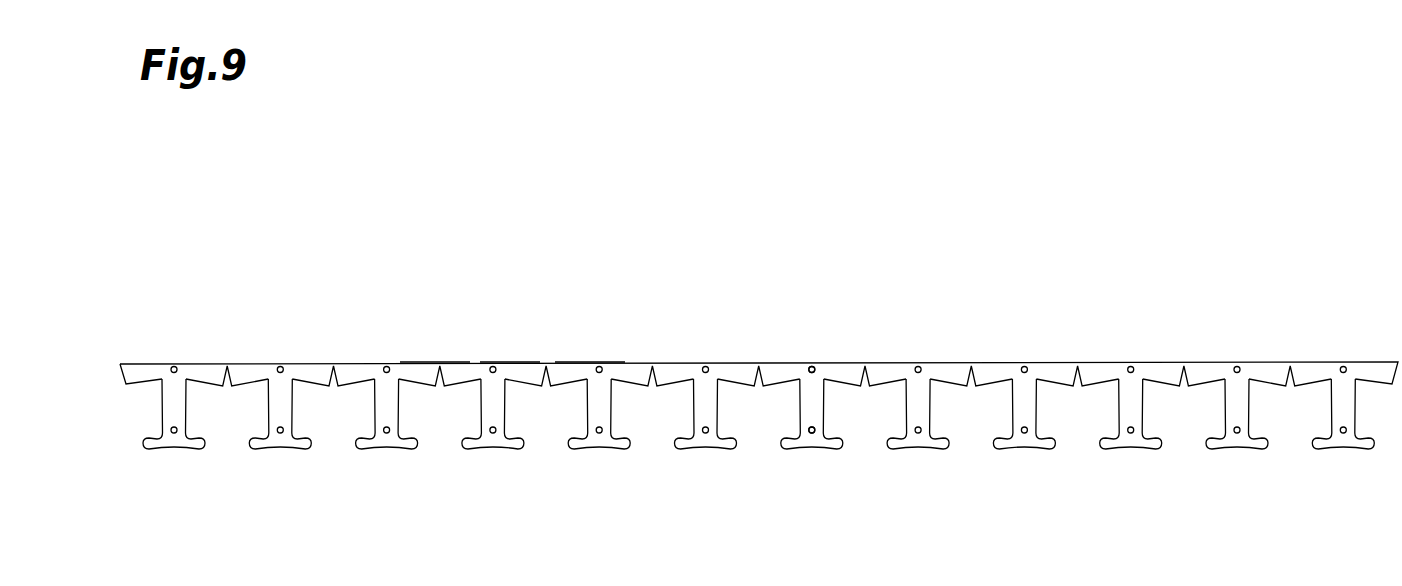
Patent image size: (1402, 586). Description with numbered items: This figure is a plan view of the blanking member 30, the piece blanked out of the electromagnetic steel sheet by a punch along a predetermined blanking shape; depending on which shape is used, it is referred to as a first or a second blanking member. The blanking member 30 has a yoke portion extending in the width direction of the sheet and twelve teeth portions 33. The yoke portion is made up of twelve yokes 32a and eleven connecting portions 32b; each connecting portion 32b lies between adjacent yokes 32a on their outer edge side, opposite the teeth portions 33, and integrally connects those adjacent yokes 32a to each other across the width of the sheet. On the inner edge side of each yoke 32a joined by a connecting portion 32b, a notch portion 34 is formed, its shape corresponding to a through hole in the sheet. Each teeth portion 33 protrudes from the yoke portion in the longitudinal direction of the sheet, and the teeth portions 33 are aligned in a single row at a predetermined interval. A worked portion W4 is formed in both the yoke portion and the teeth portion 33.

The blanking member 30 is at (759, 341).
The yoke 32a is at (583, 366).
The connecting portion 32b is at (429, 367).
The teeth portion 33 is at (602, 399).
The notch portion 34 is at (229, 367).
The worked portion W4 is at (807, 366).